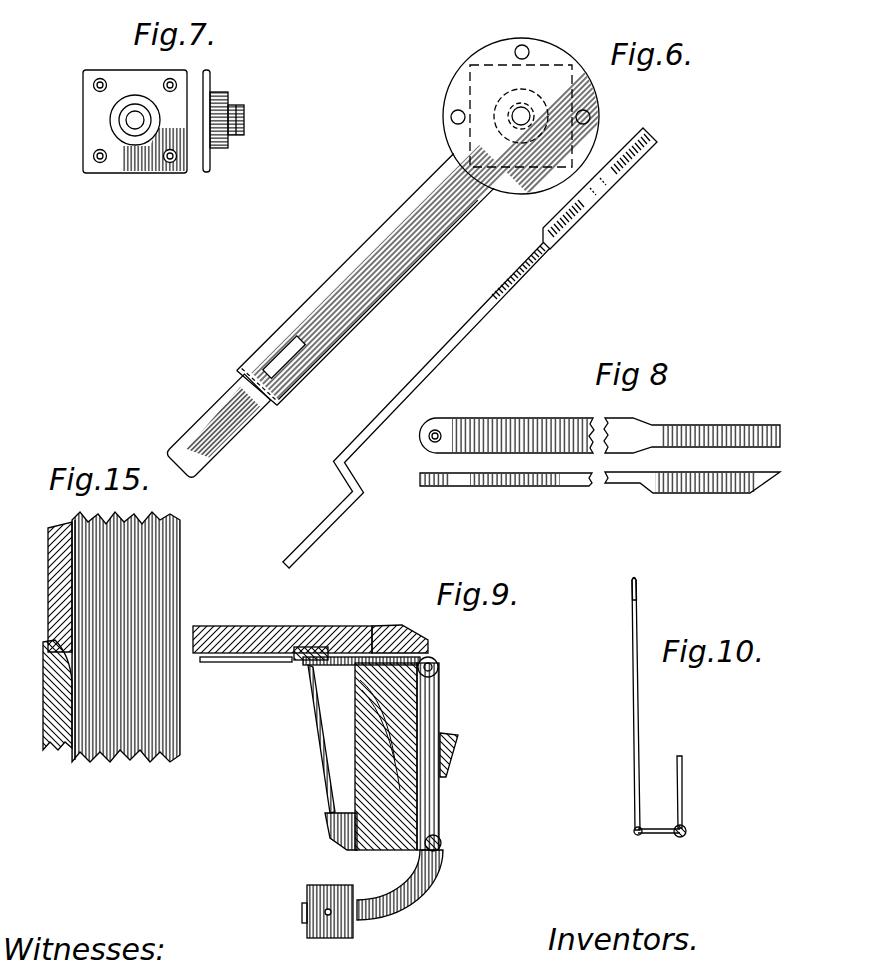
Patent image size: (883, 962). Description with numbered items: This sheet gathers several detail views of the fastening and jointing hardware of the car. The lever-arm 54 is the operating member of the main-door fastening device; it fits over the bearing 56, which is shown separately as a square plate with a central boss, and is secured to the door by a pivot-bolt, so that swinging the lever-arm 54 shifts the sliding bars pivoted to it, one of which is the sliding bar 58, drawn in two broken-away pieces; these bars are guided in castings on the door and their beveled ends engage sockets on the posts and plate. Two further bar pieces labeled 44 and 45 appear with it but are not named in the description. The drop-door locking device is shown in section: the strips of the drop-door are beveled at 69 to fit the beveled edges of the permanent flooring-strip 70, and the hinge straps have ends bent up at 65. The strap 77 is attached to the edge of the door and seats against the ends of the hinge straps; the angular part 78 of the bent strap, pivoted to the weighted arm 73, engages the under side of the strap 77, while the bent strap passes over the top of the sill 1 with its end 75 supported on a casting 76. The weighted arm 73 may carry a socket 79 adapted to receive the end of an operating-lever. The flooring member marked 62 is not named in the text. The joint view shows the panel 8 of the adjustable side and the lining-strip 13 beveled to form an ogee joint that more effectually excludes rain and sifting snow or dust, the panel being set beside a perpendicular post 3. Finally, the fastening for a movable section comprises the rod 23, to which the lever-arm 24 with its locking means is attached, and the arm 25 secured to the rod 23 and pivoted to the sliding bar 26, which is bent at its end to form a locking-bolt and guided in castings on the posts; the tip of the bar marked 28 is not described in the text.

In FIG. 7, the bearing 56 is at (163, 138).
In FIG. 6, the lever-arm 54 is at (408, 307).
In FIG. 8, the sliding bar 58 is at (705, 418).
In FIG. 8, the flat bar 44 is at (513, 487).
In FIG. 8, the chisel-tipped bar 45 is at (762, 490).
In FIG. 9, the beam 62 is at (282, 628).
In FIG. 9, the bent-up ends of hinge straps 65 is at (352, 626).
In FIG. 9, the permanent flooring-strip 70 is at (417, 630).
In FIG. 9, the strap 77 is at (302, 647).
In FIG. 9, the beveled edge 69 is at (320, 648).
In FIG. 9, the angular part 78 is at (306, 665).
In FIG. 9, the sill 1 is at (407, 810).
In FIG. 9, the socket 79 is at (452, 747).
In FIG. 9, the end of bent strap 75 is at (327, 813).
In FIG. 9, the casting 76 is at (333, 834).
In FIG. 9, the weighted arm 73 is at (408, 912).
In FIG. 15, the panel 8 is at (48, 580).
In FIG. 15, the lining-strip 13 is at (43, 713).
In FIG. 15, the perpendicular post 3 is at (165, 550).
In FIG. 10, the sliding bar 26 is at (640, 703).
In FIG. 10, the rod tip 28 is at (636, 605).
In FIG. 10, the arm 25 is at (657, 834).
In FIG. 10, the rod 23 is at (687, 831).
In FIG. 10, the lever-arm 24 is at (700, 792).